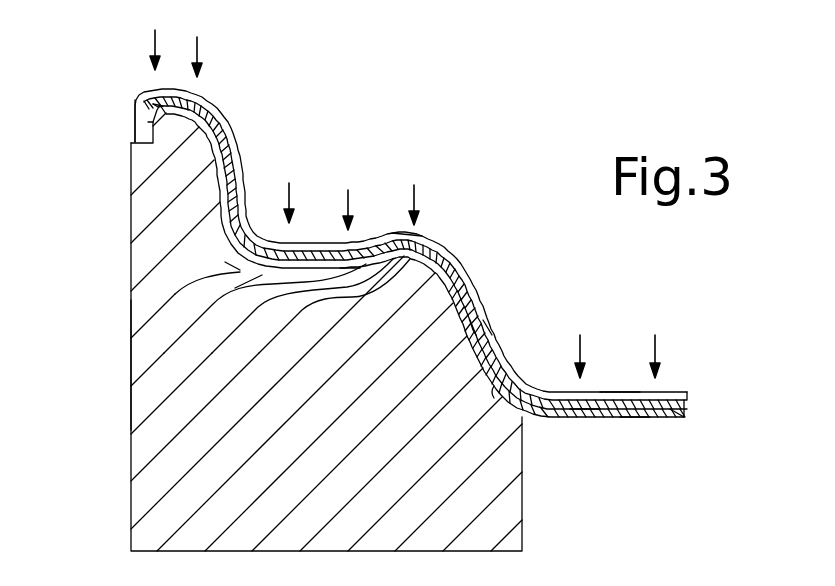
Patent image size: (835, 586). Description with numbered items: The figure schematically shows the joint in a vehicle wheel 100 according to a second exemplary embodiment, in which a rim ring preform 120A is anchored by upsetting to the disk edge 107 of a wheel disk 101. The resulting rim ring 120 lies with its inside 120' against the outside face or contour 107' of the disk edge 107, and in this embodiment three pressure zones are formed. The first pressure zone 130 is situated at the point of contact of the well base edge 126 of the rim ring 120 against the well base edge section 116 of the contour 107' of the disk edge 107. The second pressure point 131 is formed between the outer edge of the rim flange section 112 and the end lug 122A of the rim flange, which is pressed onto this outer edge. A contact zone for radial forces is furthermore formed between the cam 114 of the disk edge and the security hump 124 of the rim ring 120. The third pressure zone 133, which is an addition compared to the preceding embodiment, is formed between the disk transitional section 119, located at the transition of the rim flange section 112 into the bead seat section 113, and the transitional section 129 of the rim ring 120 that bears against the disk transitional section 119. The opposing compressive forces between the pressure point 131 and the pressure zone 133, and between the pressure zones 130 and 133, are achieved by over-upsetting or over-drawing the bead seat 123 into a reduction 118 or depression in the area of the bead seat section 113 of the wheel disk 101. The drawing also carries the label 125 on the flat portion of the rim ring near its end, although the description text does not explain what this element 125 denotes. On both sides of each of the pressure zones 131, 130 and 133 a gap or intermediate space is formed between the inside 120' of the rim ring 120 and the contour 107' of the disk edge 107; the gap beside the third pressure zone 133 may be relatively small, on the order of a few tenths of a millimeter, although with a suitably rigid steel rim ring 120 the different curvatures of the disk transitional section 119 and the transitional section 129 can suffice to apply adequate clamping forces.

The vehicle wheel 100 is at (124, 366).
The wheel disk 101 is at (178, 462).
The disk edge 107 is at (152, 271).
The contour of the disk edge 107' is at (153, 300).
The rim flange section 112 is at (146, 170).
The bead seat section 113 is at (152, 398).
The cam 114 is at (440, 285).
The well base edge section 116 is at (468, 320).
The reduction 118 is at (350, 268).
The disk transitional section 119 is at (150, 207).
The rim ring 120 is at (665, 457).
The inside of the rim ring 120' is at (726, 438).
The rim ring preform 120A is at (612, 395).
The end lug of the rim flange 122A is at (135, 122).
The bead seat 123 is at (318, 250).
The security hump 124 is at (437, 233).
The flange lower layer 125 is at (582, 412).
The well base edge 126 is at (485, 328).
The transitional section of the rim ring 129 is at (243, 165).
The first pressure zone 130 is at (490, 390).
The second pressure point 131 is at (145, 160).
The third pressure zone 133 is at (242, 200).